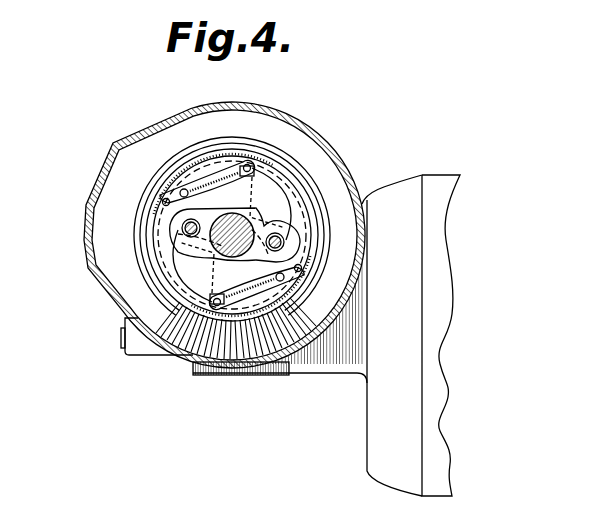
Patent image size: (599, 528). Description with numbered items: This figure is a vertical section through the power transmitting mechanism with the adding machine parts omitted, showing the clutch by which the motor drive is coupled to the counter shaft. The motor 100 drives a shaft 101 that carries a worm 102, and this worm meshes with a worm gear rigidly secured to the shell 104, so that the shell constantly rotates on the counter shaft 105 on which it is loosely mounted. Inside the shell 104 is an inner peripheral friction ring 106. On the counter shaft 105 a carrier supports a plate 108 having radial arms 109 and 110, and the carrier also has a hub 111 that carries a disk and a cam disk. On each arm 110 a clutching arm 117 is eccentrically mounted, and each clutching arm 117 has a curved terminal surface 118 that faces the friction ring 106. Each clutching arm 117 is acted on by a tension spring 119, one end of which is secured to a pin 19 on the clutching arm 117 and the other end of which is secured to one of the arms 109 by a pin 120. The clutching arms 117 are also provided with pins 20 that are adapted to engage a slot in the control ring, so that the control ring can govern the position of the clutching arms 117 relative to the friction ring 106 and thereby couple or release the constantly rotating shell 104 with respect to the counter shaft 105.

The motor 100 is at (375, 449).
The shaft 101 is at (121, 337).
The worm 102 is at (279, 364).
The shell 104 is at (290, 117).
The counter shaft 105 is at (225, 243).
The inner peripheral friction ring 106 is at (292, 163).
The plate 108 is at (312, 272).
The radial arm 109 is at (250, 165).
The radial arm 110 is at (238, 211).
The hub 111 is at (216, 247).
The clutching arm 117 is at (265, 205).
The curved terminal surface 118 is at (147, 220).
The tension spring 119 is at (238, 172).
The pin 120 is at (282, 145).
The pin 19 is at (181, 193).
The pin 20 is at (163, 197).